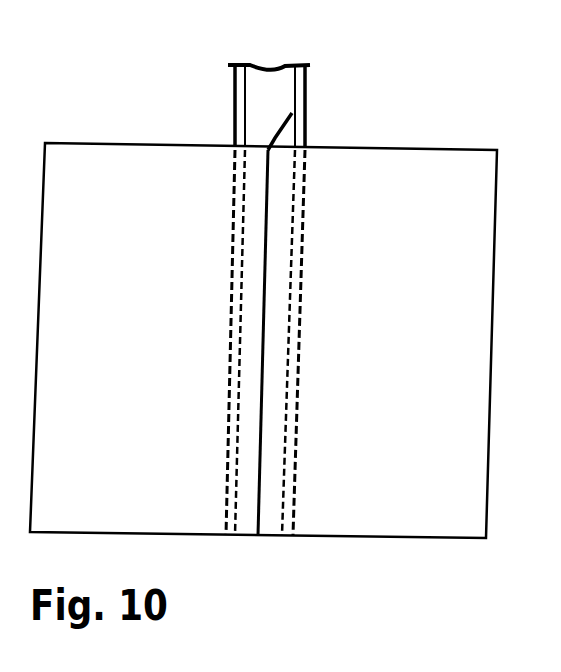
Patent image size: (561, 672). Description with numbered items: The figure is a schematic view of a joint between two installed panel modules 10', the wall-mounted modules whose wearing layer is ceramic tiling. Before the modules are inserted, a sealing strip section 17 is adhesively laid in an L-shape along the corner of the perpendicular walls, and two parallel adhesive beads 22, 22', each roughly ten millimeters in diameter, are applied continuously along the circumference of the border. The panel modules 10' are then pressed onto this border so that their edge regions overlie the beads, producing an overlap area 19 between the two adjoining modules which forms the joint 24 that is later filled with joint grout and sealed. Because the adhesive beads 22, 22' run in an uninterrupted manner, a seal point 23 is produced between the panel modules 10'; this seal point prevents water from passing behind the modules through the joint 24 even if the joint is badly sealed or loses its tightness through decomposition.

The panel module 10' is at (263, 340).
The sealing strip section 17 is at (307, 128).
The overlap area 19 is at (284, 60).
The adhesive bead 22 is at (322, 290).
The adhesive bead 22' is at (211, 286).
The seal point 23 is at (293, 113).
The joint 24 is at (266, 192).